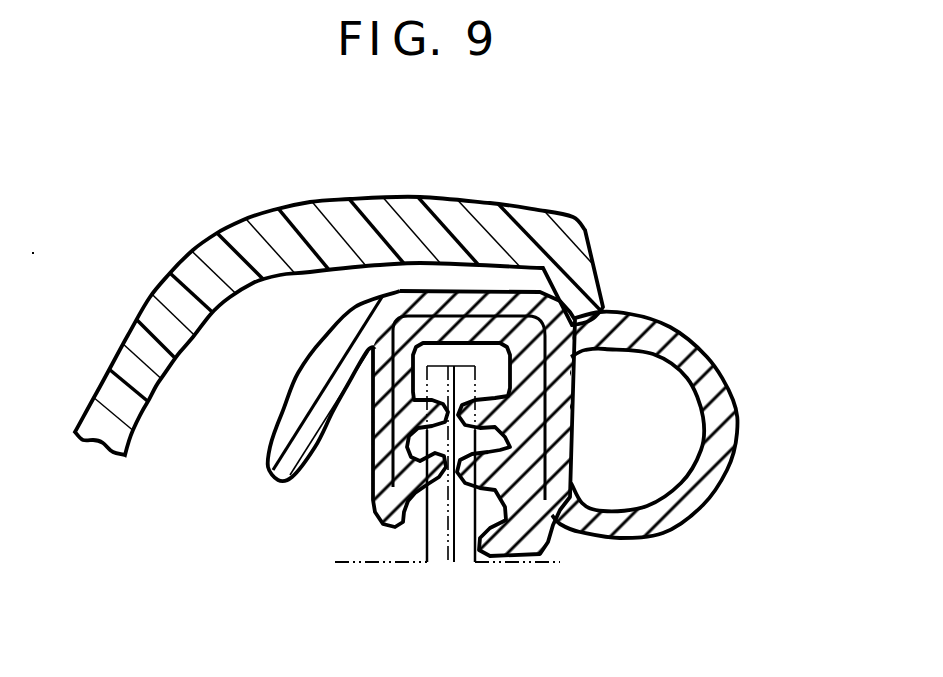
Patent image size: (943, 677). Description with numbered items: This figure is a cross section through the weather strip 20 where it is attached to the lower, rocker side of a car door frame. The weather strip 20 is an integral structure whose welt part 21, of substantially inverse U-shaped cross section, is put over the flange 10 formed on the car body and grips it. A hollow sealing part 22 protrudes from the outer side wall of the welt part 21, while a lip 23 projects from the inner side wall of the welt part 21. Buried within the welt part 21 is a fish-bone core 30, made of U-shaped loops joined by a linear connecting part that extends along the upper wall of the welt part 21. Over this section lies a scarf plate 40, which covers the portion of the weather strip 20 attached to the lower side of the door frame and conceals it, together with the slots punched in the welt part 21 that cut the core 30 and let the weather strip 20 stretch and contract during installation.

The flange 10 is at (455, 480).
The weather strip 20 is at (510, 361).
The welt part 21 is at (466, 307).
The hollow sealing part 22 is at (722, 414).
The lip 23 is at (303, 423).
The fish-bone core 30 is at (423, 313).
The scarf plate 40 is at (193, 267).